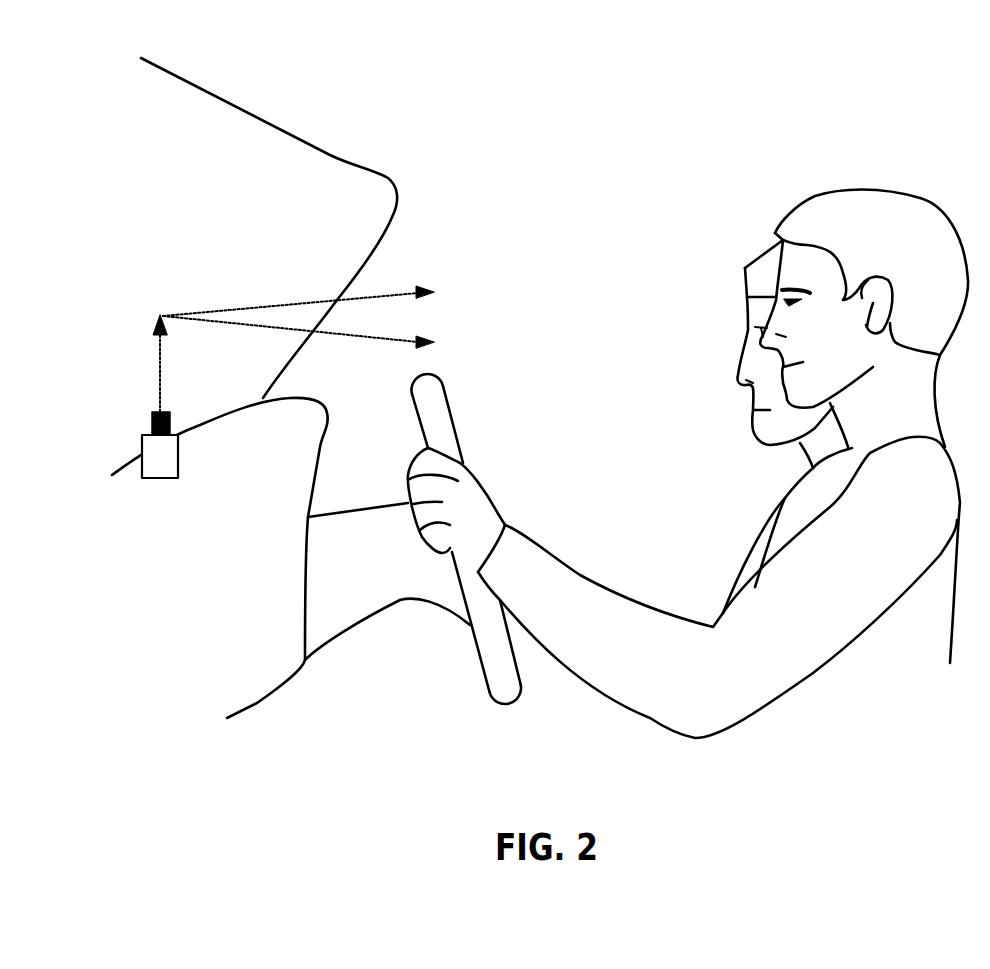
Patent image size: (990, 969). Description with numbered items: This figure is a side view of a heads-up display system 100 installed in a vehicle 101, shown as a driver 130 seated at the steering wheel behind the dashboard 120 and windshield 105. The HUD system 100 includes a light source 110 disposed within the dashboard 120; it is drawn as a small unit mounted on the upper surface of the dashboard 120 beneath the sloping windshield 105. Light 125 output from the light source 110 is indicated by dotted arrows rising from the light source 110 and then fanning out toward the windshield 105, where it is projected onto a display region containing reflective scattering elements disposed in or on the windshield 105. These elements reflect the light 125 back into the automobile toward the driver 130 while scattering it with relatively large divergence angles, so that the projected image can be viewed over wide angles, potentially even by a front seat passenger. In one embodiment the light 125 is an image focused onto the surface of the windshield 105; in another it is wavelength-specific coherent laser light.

The heads-up display system 100 is at (86, 311).
The vehicle 101 is at (669, 141).
The windshield 105 is at (365, 211).
The light source 110 is at (158, 478).
The dashboard 120 is at (273, 473).
The light 125 is at (160, 352).
The driver 130 is at (905, 248).